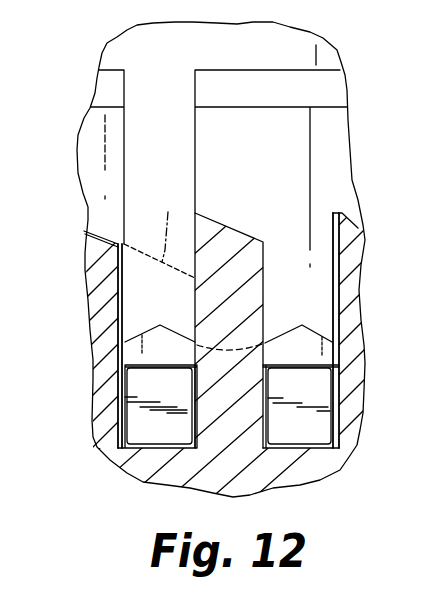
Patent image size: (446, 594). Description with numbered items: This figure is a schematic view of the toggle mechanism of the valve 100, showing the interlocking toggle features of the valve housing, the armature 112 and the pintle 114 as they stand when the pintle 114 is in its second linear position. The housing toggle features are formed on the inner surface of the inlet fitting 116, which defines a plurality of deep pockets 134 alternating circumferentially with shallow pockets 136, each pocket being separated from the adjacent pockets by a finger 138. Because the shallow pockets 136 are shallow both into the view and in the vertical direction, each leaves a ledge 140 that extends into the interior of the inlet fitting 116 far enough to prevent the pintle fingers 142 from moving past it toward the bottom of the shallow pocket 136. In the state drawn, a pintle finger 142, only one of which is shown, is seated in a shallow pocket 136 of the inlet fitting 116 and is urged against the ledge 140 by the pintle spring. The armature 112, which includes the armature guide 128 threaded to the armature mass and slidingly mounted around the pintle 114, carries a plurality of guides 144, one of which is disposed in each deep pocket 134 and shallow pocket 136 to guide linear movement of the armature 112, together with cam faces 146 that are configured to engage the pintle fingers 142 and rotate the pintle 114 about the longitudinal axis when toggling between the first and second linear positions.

The valve 100 is at (368, 107).
The armature 112 is at (240, 363).
The pintle 114 is at (125, 52).
The inlet fitting 116 is at (137, 458).
The armature guide 128 is at (152, 352).
The deep pockets 134 is at (342, 277).
The shallow pockets 136 is at (134, 289).
The finger 138 is at (238, 262).
The ledge 140 is at (168, 212).
The pintle fingers 142 is at (167, 143).
The guides 144 is at (147, 422).
The cam faces 146 is at (313, 327).